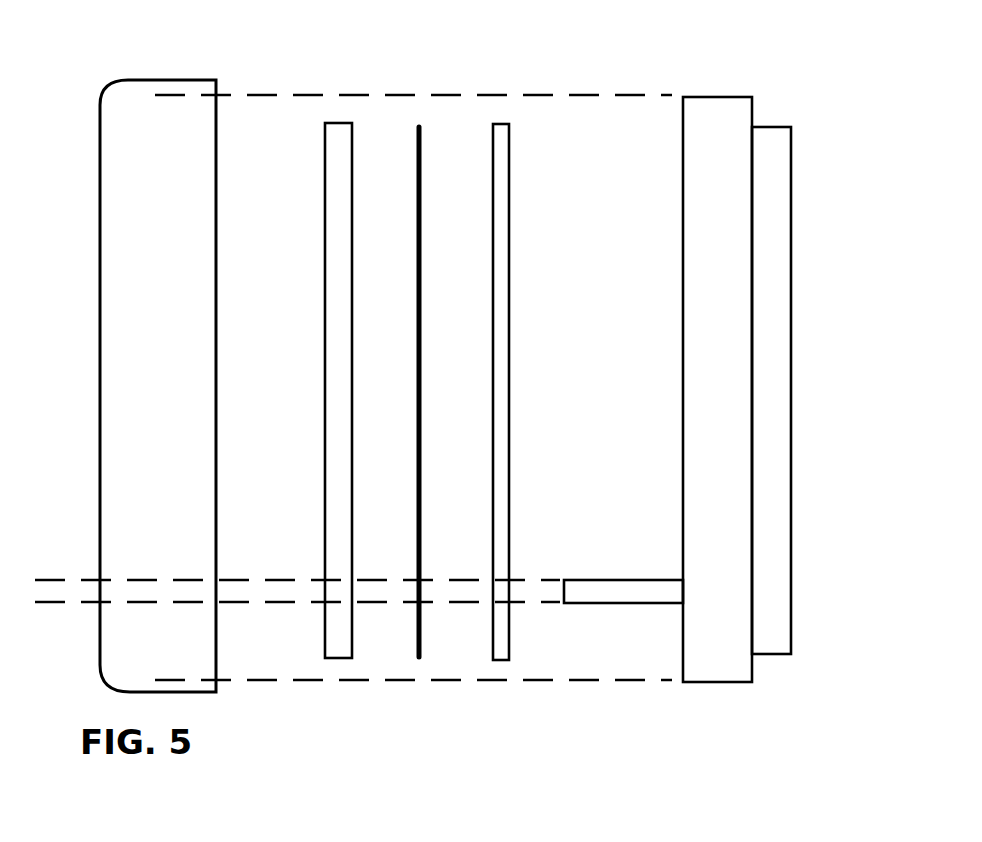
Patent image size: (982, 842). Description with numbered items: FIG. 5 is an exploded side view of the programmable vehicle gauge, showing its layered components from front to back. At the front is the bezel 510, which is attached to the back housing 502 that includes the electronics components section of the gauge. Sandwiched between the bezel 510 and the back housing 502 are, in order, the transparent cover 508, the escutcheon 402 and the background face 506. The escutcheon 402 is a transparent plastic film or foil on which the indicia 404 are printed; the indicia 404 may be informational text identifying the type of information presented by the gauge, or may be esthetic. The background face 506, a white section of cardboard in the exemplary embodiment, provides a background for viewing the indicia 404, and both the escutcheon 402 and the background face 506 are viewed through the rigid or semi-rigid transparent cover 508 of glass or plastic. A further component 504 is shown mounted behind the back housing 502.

The bezel 510 is at (150, 80).
The transparent cover 508 is at (325, 262).
The escutcheon 402 is at (421, 186).
The background face 506 is at (509, 259).
The back housing 502 is at (700, 97).
The circuit board 504 is at (791, 263).
The indicia 404 is at (591, 604).